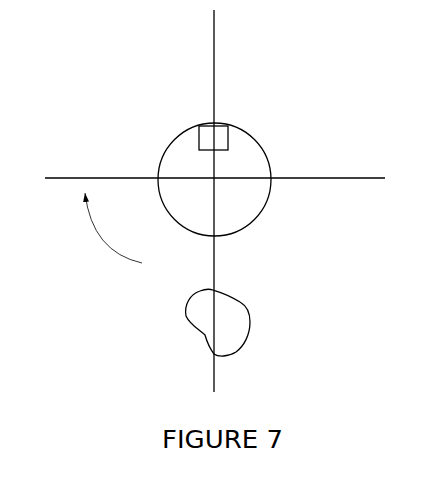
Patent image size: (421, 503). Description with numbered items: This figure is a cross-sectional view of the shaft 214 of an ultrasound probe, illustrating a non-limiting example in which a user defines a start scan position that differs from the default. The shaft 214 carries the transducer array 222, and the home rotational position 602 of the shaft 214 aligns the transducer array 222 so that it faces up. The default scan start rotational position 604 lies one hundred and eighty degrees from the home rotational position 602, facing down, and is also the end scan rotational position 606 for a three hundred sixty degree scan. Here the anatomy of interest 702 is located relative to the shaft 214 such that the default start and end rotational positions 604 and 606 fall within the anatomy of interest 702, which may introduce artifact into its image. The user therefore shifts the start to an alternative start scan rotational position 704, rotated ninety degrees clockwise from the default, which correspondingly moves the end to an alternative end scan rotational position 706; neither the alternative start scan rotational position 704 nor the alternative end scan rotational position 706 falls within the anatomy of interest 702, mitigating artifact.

The shaft 214 is at (88, 80).
The transducer array 222 is at (199, 128).
The home rotational position 602 is at (213, 62).
The default scan start rotational position 604 is at (213, 258).
The end scan rotational position 606 is at (216, 258).
The anatomy of interest 702 is at (248, 313).
The alternative start scan rotational position 704 is at (76, 178).
The alternative end scan rotational position 706 is at (76, 178).